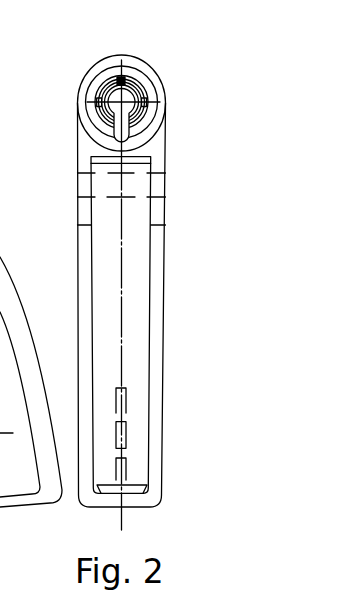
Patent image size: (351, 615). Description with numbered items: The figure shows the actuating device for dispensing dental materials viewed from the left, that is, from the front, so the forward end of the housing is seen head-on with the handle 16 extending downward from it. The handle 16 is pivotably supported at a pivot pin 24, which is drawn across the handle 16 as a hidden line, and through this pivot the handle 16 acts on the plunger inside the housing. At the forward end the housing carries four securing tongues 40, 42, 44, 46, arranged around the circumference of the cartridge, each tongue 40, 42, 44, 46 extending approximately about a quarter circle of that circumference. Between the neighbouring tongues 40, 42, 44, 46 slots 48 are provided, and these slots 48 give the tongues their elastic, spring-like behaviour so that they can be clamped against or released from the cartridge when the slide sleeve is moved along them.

The handle 16 is at (138, 463).
The pivot pin 24 is at (183, 187).
The securing tongue 40 is at (97, 78).
The securing tongue 42 is at (143, 92).
The securing tongue 44 is at (145, 117).
The securing tongue 46 is at (103, 121).
The slots 48 is at (122, 80).